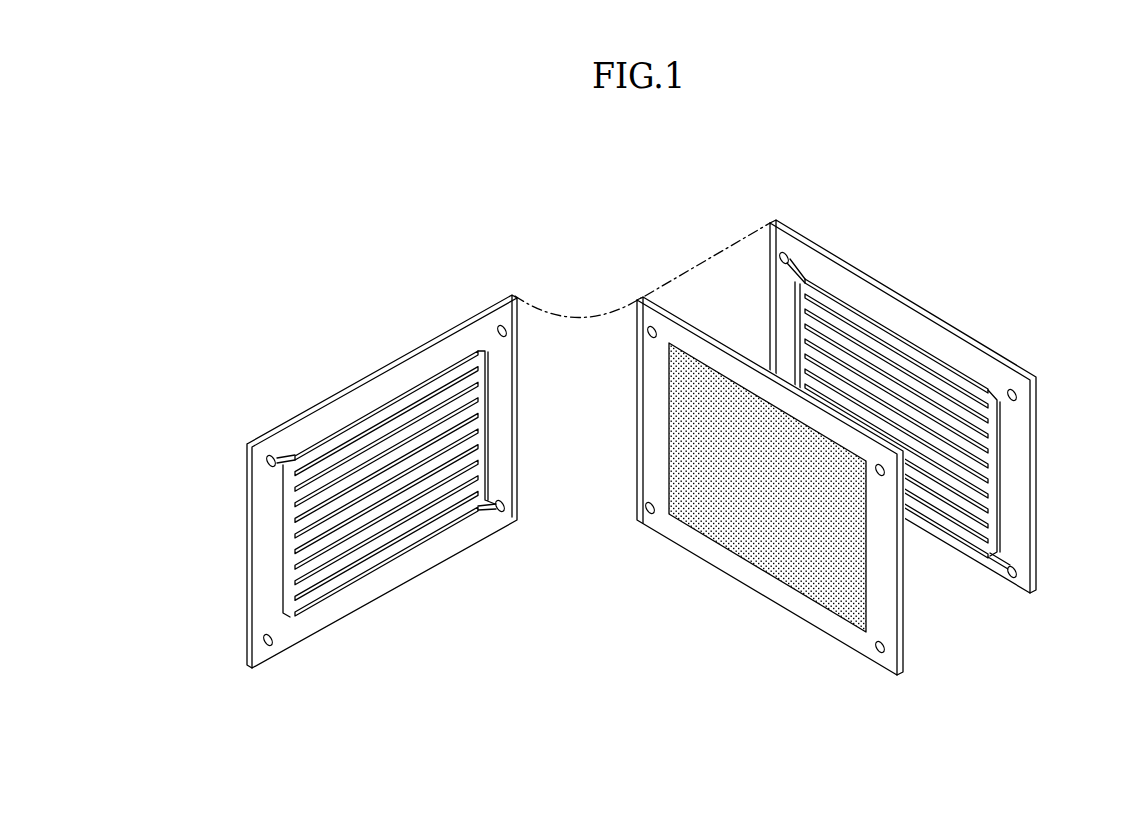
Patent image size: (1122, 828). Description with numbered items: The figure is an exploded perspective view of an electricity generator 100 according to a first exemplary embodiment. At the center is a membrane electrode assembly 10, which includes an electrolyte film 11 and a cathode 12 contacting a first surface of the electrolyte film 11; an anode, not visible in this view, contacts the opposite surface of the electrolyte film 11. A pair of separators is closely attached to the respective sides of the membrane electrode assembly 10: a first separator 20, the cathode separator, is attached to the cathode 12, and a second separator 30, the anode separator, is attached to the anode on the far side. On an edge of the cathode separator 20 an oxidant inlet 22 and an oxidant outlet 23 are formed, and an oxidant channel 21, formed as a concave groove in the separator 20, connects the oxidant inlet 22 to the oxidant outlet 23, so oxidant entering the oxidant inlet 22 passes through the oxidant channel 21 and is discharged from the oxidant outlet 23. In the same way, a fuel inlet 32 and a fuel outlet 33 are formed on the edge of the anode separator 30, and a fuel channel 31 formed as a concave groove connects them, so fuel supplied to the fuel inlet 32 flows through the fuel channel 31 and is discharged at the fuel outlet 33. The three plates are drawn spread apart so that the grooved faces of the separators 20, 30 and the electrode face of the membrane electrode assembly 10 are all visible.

The electricity generator 100 is at (590, 201).
The membrane electrode assembly 10 is at (769, 486).
The electrolyte film 11 is at (715, 512).
The cathode 12 is at (793, 600).
The first separator 20 is at (406, 481).
The oxidant channel 21 is at (484, 440).
The oxidant inlet 22 is at (272, 456).
The oxidant outlet 23 is at (506, 505).
The second separator 30 is at (929, 389).
The fuel channel 31 is at (993, 478).
The fuel inlet 32 is at (784, 250).
The fuel outlet 33 is at (1022, 578).